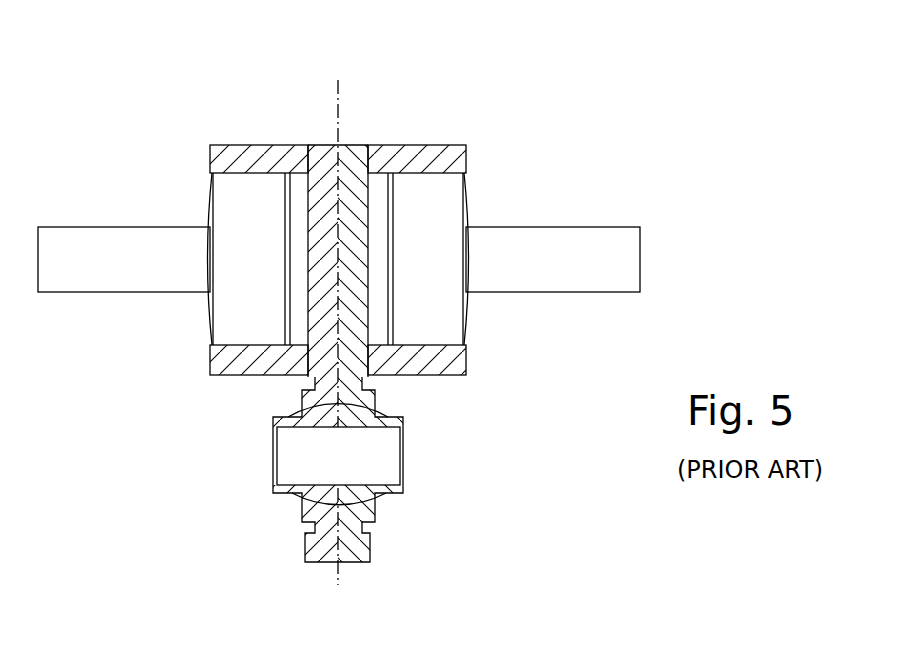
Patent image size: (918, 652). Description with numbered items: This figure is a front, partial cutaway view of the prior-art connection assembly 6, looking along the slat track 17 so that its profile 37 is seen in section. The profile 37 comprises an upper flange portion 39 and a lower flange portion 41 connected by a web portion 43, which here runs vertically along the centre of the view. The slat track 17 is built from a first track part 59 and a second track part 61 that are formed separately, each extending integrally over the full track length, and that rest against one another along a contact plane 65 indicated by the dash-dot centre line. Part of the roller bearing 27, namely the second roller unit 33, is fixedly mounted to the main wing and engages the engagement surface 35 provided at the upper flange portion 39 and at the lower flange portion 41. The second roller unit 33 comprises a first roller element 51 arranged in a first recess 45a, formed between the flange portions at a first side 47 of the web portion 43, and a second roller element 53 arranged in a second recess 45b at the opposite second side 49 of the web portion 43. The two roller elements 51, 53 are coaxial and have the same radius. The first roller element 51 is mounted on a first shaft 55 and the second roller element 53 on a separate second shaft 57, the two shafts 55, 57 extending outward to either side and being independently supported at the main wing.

The connection assembly 6 is at (532, 96).
The roller bearing 27 is at (172, 123).
The second roller unit 33 is at (113, 66).
The contact plane 65 is at (334, 90).
The upper flange portion 39 is at (276, 158).
The lower flange portion 41 is at (258, 362).
The engagement surface 35 is at (247, 152).
The slat track 17 is at (407, 156).
The profile 37 is at (538, 404).
The first roller element 51 is at (232, 249).
The second roller element 53 is at (418, 249).
The first recess 45a is at (299, 205).
The second recess 45b is at (378, 193).
The first side 47 is at (306, 318).
The second side 49 is at (380, 318).
The web portion 43 is at (310, 275).
The first track part 59 is at (212, 158).
The second track part 61 is at (465, 156).
The first shaft 55 is at (66, 275).
The second shaft 57 is at (622, 275).